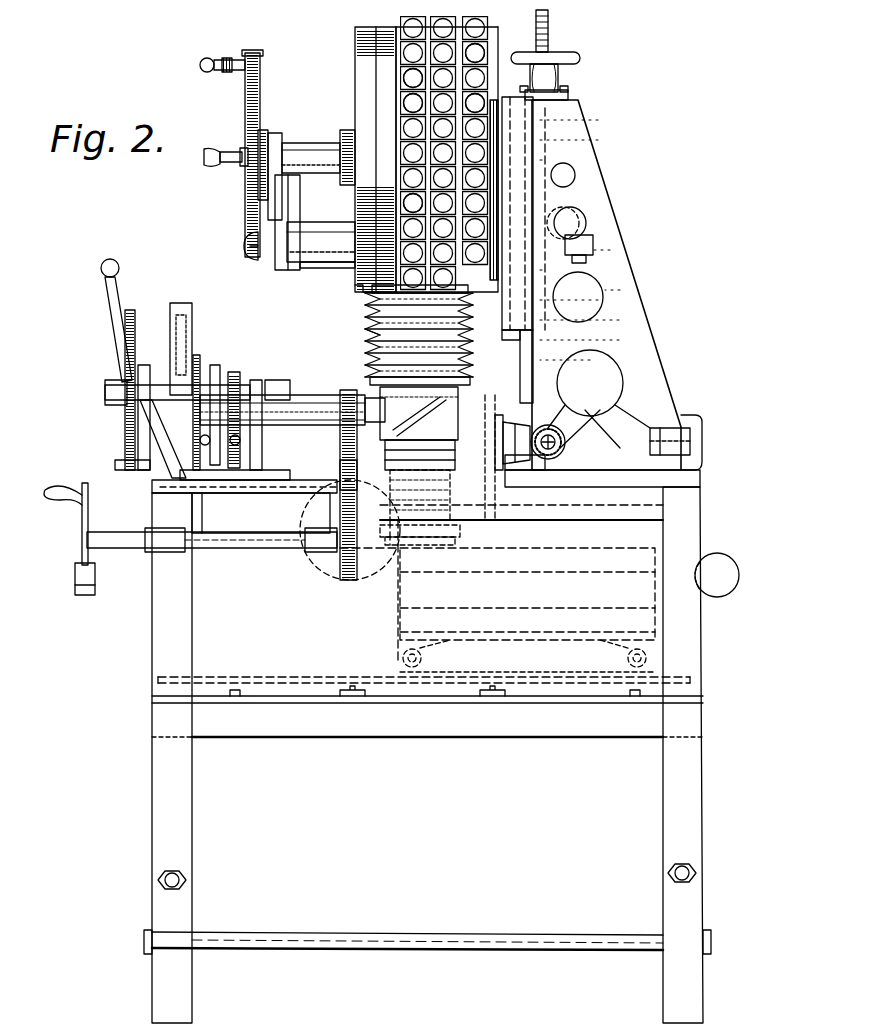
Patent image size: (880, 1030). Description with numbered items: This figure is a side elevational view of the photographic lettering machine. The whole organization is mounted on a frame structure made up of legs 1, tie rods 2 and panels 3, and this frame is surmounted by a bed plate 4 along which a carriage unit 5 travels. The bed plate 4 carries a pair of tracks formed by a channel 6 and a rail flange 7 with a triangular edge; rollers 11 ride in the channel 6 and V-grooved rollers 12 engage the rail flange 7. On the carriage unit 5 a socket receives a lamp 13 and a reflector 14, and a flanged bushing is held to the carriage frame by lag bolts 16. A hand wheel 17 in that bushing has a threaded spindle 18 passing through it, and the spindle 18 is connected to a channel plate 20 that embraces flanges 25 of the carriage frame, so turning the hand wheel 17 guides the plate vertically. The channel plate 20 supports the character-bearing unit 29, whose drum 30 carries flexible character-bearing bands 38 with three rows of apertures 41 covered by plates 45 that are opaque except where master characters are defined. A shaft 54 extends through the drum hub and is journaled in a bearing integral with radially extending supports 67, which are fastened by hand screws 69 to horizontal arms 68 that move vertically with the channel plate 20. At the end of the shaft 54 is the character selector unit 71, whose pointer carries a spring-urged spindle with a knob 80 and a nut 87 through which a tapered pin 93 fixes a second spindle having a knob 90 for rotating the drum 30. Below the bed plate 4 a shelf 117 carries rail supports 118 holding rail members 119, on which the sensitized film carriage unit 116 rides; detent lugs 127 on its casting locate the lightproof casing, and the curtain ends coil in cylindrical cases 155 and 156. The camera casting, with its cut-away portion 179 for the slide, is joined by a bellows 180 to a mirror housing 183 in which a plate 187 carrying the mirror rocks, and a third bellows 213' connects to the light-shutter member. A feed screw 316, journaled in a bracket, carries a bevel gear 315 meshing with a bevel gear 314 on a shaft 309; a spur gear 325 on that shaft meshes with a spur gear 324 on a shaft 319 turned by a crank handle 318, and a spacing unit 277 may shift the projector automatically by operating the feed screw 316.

The legs 1 is at (182, 833).
The tie rods 2 is at (396, 944).
The panels 3 is at (205, 630).
The bed plate 4 is at (680, 480).
The carriage unit 5 is at (638, 299).
The channel 6 is at (700, 448).
The rail flange 7 is at (510, 475).
The rollers 11 is at (686, 438).
The rollers 12 is at (493, 430).
The lamp 13 is at (572, 178).
The reflector 14 is at (590, 192).
The lag bolts 16 is at (565, 94).
The hand wheel 17 is at (572, 58).
The threaded spindle 18 is at (549, 32).
The channel plate 20 is at (532, 312).
The flanges 25 is at (522, 347).
The character-bearing unit 29 is at (355, 120).
The drum 30 is at (368, 45).
The character-bearing bands 38 is at (450, 26).
The apertures 41 is at (404, 102).
The plates 45 is at (404, 79).
The shaft 54 is at (294, 148).
The radially extending supports 67 is at (282, 203).
The horizontal arms 68 is at (316, 262).
The hand screws 69 is at (244, 248).
The character selector unit 71 is at (262, 100).
The knob 80 is at (216, 79).
The nut 87 is at (258, 170).
The knob 90 is at (204, 158).
The tapered pin 93 is at (240, 150).
The sensitized film carriage unit 116 is at (590, 577).
The shelf 117 is at (432, 703).
The rail supports 118 is at (345, 700).
The rail members 119 is at (293, 670).
The detent lugs 127 is at (660, 608).
The cylindrical case 155 is at (356, 583).
The cylindrical case 156 is at (730, 572).
The cut-away portion 179 is at (372, 300).
The bellows 180 is at (372, 333).
The mirror housing 183 is at (372, 370).
The plate 187 is at (415, 399).
The third bellows 213' is at (465, 535).
The spacing unit 277 is at (208, 365).
The shaft 309 is at (305, 410).
The bevel gear 314 is at (538, 470).
The bevel gear 315 is at (566, 450).
The feed screw 316 is at (556, 442).
The crank handle 318 is at (82, 515).
The shaft 319 is at (247, 548).
The spur gear 324 is at (345, 575).
The spur gear 325 is at (348, 390).